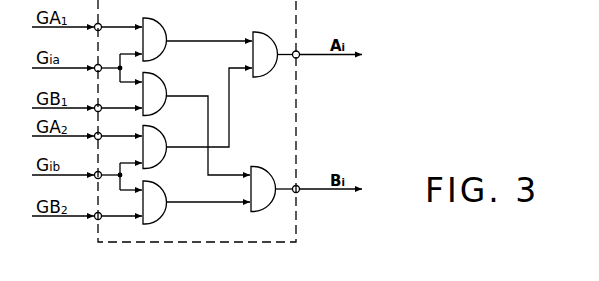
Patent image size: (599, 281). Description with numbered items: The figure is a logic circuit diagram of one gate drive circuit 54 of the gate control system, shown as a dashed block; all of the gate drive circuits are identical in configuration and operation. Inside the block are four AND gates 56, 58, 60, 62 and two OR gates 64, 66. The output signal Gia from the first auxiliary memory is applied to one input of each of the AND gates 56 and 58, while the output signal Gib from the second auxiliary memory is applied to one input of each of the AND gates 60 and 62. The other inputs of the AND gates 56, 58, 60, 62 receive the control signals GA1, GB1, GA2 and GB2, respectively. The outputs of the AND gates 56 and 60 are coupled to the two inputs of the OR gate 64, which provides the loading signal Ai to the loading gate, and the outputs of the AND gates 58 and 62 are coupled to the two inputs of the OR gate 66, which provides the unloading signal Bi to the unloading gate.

The gate drive circuit 54 is at (297, 124).
The AND gate 56 is at (161, 24).
The AND gate 58 is at (163, 81).
The AND gate 60 is at (162, 133).
The AND gate 62 is at (162, 188).
The OR gate 64 is at (265, 34).
The OR gate 66 is at (261, 167).